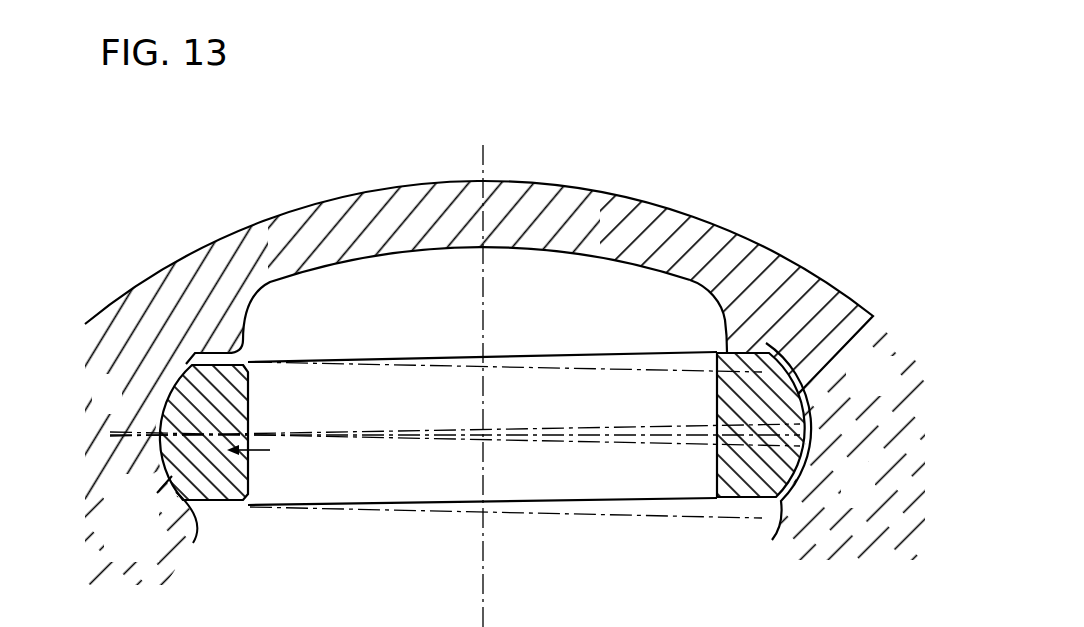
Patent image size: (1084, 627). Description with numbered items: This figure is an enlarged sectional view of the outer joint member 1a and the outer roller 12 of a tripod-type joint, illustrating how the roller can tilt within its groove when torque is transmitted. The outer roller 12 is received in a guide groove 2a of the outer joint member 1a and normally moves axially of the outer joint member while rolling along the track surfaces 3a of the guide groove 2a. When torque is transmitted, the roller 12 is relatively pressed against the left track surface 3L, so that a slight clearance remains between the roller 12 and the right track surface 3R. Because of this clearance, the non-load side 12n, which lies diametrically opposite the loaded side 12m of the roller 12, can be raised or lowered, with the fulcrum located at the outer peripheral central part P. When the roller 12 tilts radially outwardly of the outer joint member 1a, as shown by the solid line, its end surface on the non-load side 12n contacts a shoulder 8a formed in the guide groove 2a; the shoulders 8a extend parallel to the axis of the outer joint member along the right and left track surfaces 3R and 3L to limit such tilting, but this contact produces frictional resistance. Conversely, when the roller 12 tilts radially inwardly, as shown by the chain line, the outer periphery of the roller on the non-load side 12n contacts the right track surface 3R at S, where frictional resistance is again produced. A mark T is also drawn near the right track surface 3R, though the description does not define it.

The outer joint member 1a is at (180, 262).
The guide groove 2a is at (603, 283).
The shoulder 8a is at (735, 345).
The right track surface 3R is at (811, 412).
The contact point S is at (802, 493).
The left track surface 3L is at (141, 527).
The track surface 3a is at (141, 499).
The outer peripheral central part P is at (152, 431).
The outer roller 12 is at (502, 497).
The loaded side 12m is at (223, 500).
The non-load side 12n is at (742, 493).
The tolerance mark T is at (904, 325).